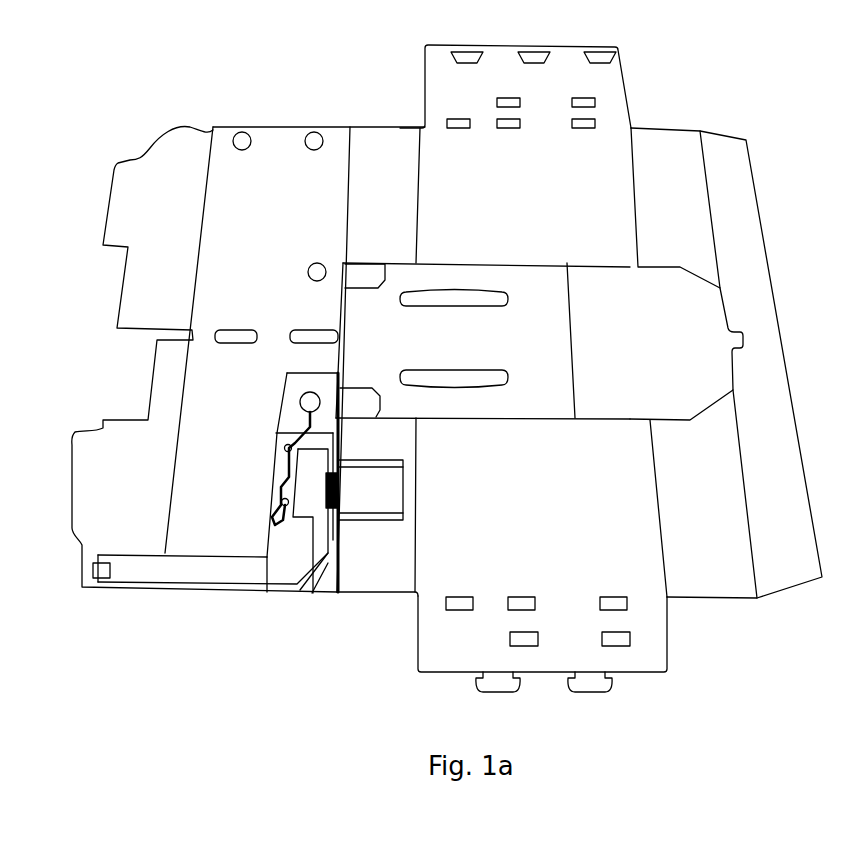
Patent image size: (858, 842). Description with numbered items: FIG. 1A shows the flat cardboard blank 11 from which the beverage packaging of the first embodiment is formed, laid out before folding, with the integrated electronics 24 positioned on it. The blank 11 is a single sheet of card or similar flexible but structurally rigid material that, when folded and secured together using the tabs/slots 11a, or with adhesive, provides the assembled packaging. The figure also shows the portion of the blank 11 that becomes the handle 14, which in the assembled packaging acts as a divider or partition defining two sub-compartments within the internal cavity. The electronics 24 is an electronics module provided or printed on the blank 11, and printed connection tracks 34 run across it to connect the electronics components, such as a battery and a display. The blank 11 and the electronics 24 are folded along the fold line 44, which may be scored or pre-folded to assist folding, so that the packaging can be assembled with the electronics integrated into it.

The blank 11 is at (765, 215).
The tabs/slots 11a is at (600, 78).
The handle 14 is at (513, 333).
The integrated electronics 24 is at (220, 570).
The printed connection tracks 34 is at (338, 490).
The fold line 44 is at (327, 577).